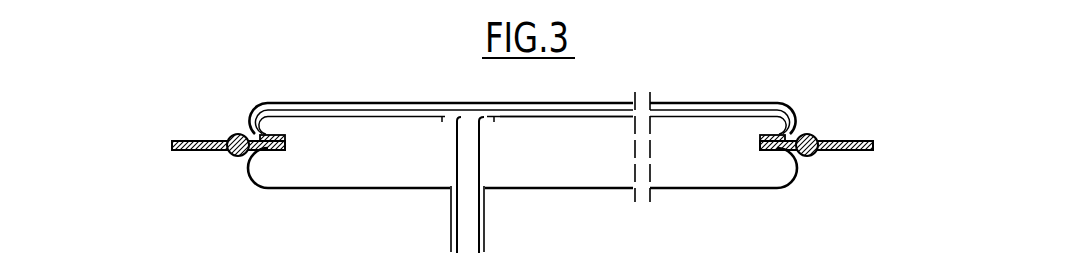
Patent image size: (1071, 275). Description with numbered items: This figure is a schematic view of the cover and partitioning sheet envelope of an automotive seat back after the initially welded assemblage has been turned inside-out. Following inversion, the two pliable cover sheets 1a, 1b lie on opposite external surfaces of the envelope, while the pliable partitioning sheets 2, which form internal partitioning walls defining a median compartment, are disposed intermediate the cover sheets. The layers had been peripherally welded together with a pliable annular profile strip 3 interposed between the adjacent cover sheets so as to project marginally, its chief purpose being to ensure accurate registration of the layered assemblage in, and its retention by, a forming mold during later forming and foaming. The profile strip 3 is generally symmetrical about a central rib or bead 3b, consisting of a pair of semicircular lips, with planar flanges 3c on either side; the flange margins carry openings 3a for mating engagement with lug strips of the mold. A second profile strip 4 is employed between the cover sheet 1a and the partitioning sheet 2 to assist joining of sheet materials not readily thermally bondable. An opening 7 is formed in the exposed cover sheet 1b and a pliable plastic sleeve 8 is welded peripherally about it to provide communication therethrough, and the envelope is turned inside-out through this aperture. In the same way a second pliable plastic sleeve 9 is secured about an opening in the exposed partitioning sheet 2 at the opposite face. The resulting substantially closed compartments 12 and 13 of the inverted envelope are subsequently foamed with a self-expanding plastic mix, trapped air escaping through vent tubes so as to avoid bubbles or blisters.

The cover sheet 1a is at (589, 190).
The cover sheet 1b is at (425, 102).
The partitioning sheet 2 is at (557, 114).
The profile strip 3 is at (522, 155).
The openings 3a is at (186, 140).
The central rib 3b is at (237, 135).
The planar flanges 3c is at (218, 151).
The second profile strip 4 is at (286, 139).
The opening 7 is at (485, 190).
The pliable plastic sleeve 8 is at (449, 240).
The second pliable plastic sleeve 9 is at (455, 155).
The compartment 12 is at (313, 109).
The compartment 13 is at (368, 115).